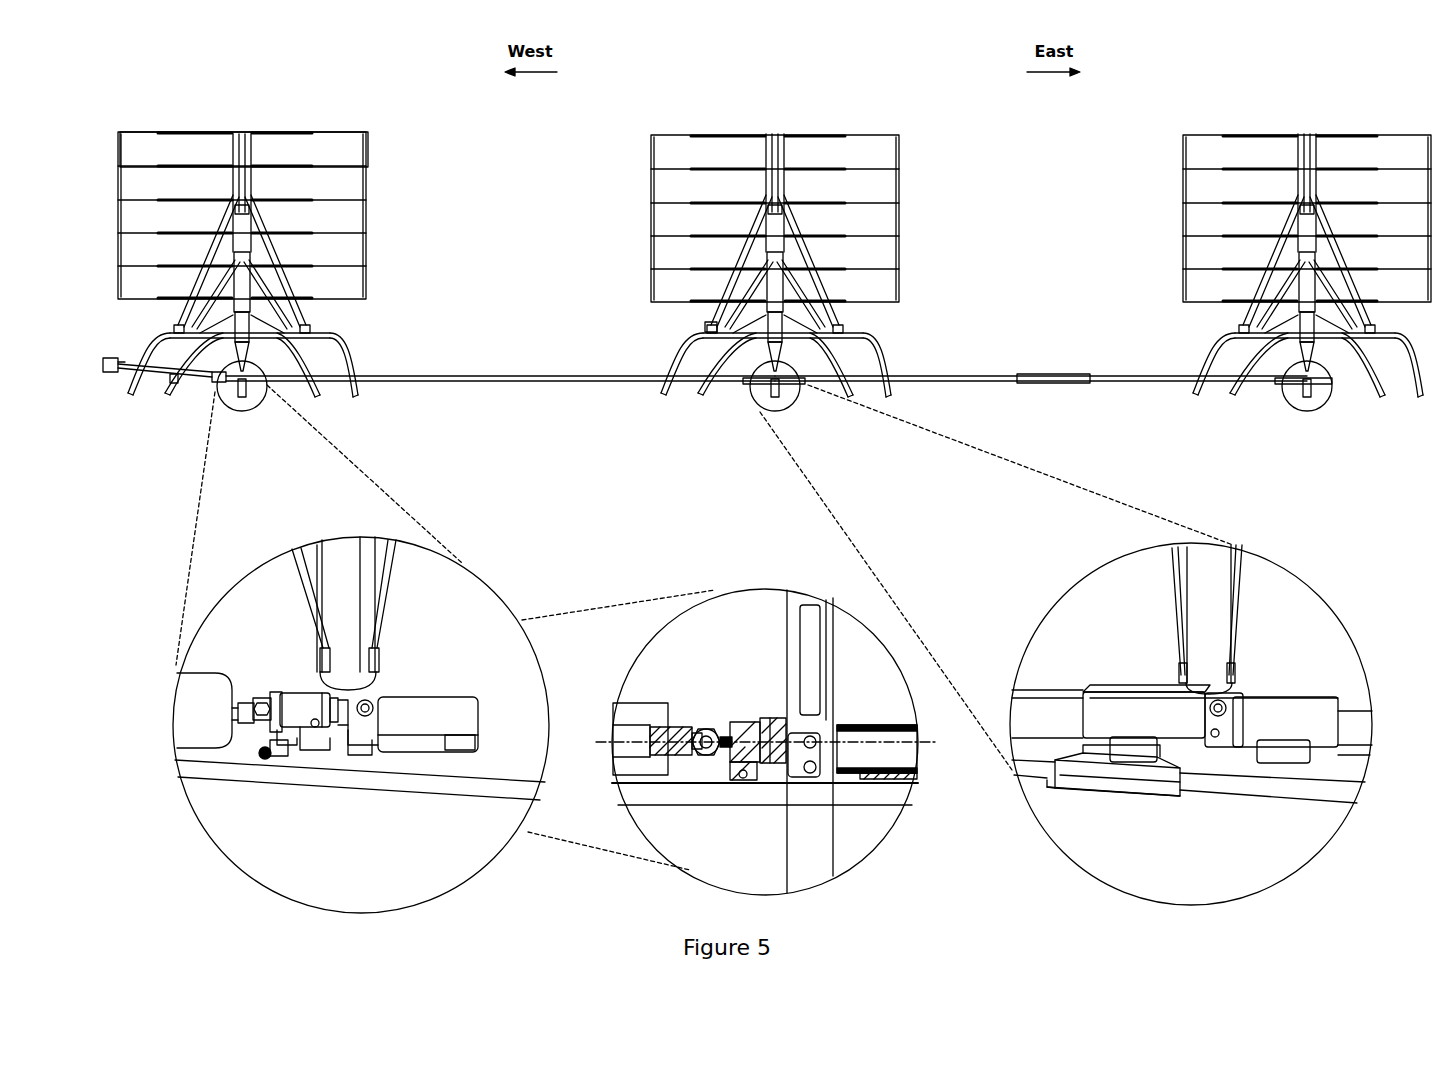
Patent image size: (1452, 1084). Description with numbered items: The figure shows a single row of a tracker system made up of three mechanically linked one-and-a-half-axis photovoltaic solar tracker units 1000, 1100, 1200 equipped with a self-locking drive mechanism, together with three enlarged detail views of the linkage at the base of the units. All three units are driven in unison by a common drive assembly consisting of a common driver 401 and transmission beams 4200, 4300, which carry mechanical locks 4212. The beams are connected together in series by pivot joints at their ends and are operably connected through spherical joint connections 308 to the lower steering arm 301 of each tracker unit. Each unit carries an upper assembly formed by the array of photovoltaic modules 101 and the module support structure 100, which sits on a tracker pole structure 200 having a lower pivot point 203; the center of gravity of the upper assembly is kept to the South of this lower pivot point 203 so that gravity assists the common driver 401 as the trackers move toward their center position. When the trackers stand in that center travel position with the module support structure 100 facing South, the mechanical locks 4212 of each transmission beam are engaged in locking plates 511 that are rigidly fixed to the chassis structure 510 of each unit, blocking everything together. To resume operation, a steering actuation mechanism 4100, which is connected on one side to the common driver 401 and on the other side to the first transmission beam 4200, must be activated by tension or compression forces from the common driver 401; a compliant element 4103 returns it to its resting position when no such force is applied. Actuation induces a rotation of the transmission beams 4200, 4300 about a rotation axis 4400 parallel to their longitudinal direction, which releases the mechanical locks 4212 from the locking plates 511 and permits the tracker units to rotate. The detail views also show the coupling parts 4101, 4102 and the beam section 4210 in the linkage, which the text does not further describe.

The photovoltaic solar tracker unit 1000 is at (280, 228).
The photovoltaic solar tracker unit 1100 is at (739, 230).
The photovoltaic solar tracker unit 1200 is at (1428, 110).
The module support structure 100 is at (280, 191).
The photovoltaic modules 101 is at (130, 105).
The tracker pole structure 200 is at (735, 265).
The lower pivot point 203 is at (706, 328).
The lower steering arm 301 is at (333, 547).
The spherical joint connections 308 is at (372, 700).
The common driver 401 is at (160, 385).
The chassis structure 510 is at (715, 374).
The locking plates 511 is at (1090, 787).
The steering actuation mechanism 4100 is at (295, 735).
The coupling bolt 4101 is at (262, 758).
The clamp bracket 4102 is at (330, 726).
The compliant element 4103 is at (700, 705).
The first transmission beam 4200 is at (437, 374).
The drive shaft tube 4210 is at (870, 773).
The mechanical locks 4212 is at (1120, 760).
The transmission beam 4300 is at (1003, 374).
The rotation axis 4400 is at (612, 760).